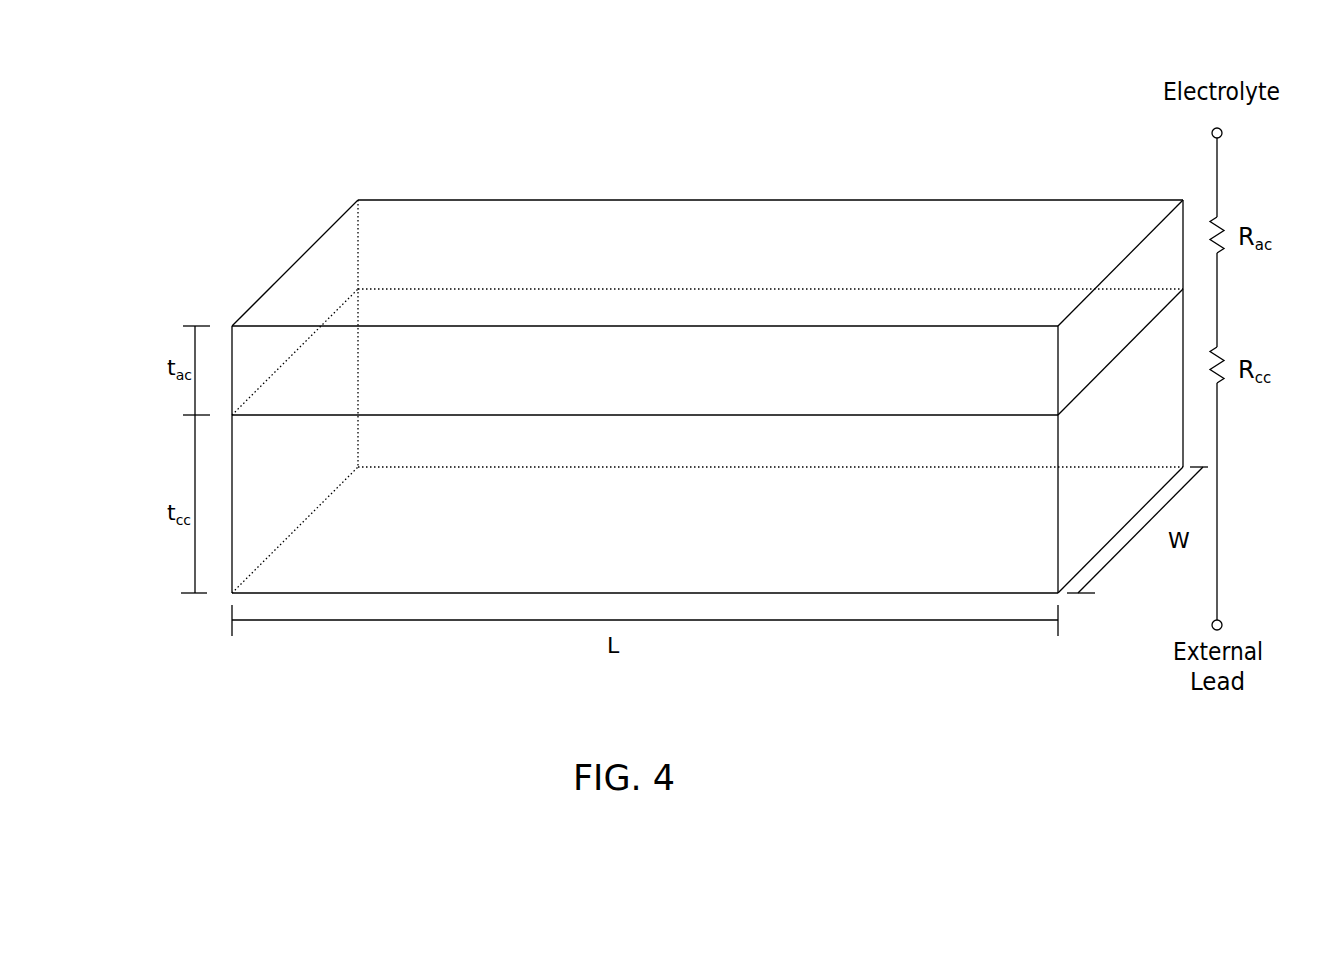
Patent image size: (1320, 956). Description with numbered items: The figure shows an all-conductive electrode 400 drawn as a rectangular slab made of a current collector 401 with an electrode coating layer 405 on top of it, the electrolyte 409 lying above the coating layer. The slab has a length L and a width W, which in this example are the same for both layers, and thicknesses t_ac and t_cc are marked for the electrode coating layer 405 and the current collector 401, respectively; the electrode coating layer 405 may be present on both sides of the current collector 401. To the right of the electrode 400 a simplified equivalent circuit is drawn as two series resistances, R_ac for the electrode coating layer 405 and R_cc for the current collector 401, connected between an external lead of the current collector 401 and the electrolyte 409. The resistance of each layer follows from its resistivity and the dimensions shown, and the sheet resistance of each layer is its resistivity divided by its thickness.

The electrode 400 is at (240, 178).
The current collector 401 is at (742, 517).
The electrode coating layer 405 is at (810, 386).
The electrolyte 409 is at (770, 201).